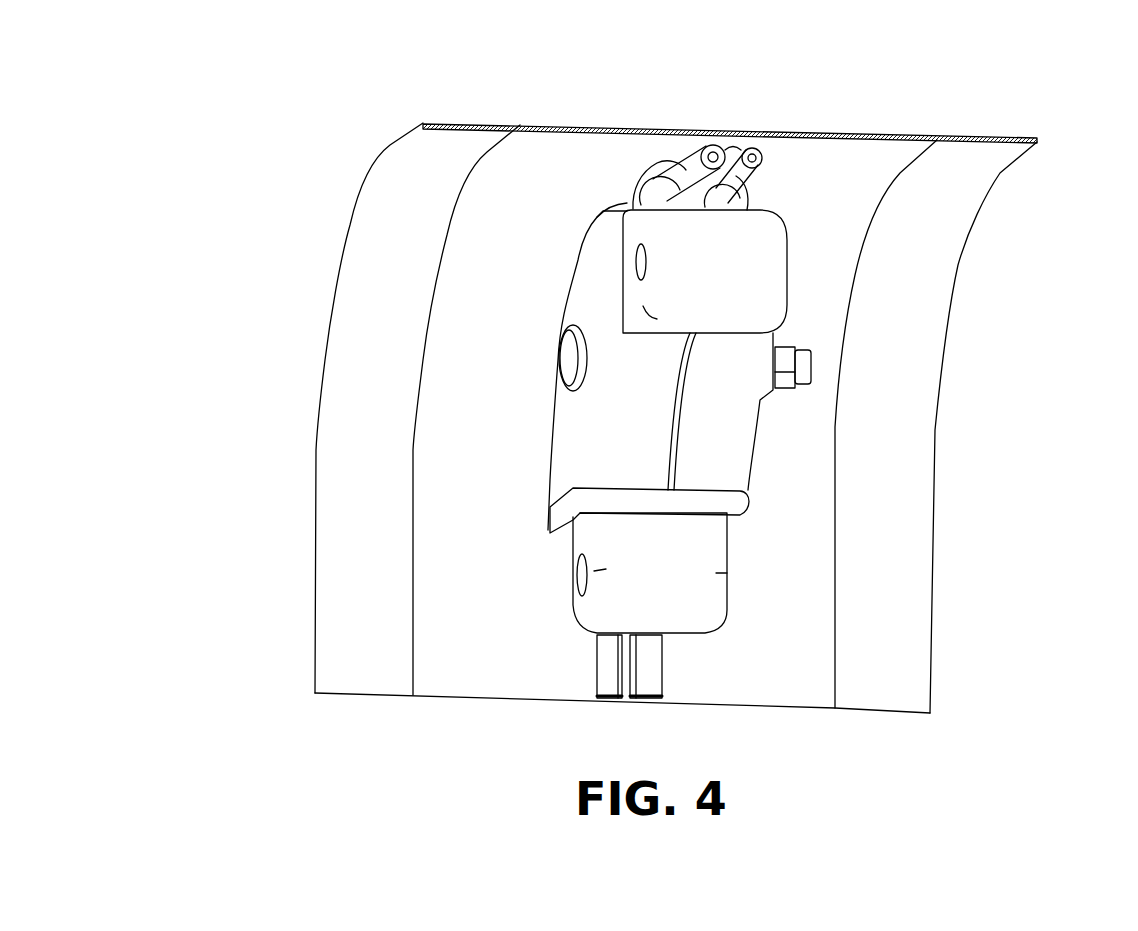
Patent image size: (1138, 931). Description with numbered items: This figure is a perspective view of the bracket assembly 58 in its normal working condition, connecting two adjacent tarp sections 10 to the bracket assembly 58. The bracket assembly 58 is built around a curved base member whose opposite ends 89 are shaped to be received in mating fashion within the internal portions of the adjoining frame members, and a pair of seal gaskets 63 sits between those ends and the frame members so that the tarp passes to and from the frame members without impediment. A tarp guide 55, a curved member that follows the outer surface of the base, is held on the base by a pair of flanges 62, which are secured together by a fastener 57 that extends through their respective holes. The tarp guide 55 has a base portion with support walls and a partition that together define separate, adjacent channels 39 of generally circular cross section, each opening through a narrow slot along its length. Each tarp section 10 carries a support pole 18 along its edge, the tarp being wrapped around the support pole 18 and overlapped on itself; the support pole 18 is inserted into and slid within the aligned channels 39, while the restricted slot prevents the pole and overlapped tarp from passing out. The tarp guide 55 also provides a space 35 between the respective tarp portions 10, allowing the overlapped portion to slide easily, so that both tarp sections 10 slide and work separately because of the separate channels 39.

The tarp section 10 is at (373, 325).
The support pole 18 is at (710, 152).
The space 35 is at (733, 146).
The channel 39 is at (725, 202).
The tarp guide 55 is at (623, 203).
The fastener 57 is at (570, 340).
The bracket assembly 58 is at (807, 190).
The flange 62 is at (567, 443).
The seal gasket 63 is at (562, 513).
The end of curved base member 89 is at (757, 265).